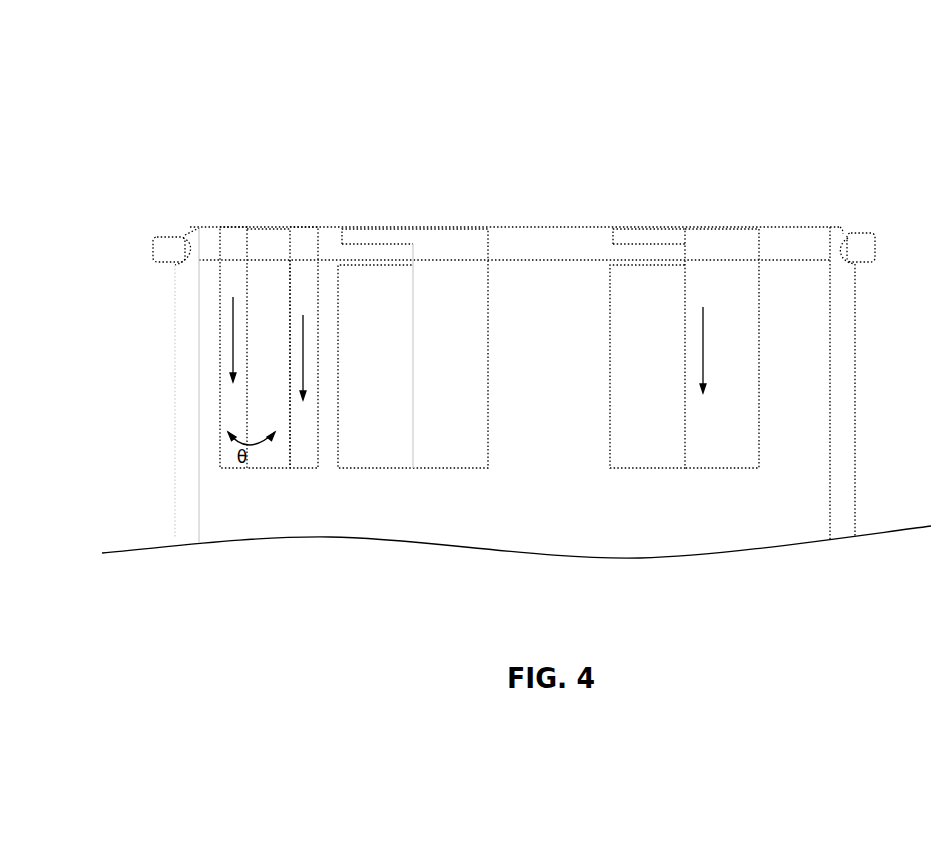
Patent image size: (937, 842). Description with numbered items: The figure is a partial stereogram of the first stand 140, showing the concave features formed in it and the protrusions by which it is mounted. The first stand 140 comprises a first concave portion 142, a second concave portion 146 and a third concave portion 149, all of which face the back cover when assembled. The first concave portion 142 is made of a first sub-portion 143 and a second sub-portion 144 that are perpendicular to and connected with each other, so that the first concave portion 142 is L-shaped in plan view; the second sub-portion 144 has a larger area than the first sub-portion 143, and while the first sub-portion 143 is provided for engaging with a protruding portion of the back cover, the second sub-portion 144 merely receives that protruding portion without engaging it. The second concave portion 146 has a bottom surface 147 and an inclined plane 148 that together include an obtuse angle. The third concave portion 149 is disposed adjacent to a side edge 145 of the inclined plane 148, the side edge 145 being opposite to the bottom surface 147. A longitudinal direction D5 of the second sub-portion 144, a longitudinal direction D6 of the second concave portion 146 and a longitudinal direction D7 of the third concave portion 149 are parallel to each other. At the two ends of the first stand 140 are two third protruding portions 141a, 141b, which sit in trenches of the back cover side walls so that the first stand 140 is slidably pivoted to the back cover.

The first stand 140 is at (83, 50).
The third protruding portion 141a is at (860, 250).
The third protruding portion 141b is at (166, 247).
The first concave portion 142 is at (787, 125).
The first sub-portion 143 is at (647, 240).
The second sub-portion 144 is at (713, 273).
The side edge 145 is at (288, 410).
The second concave portion 146 is at (328, 133).
The bottom surface 147 is at (231, 280).
The inclined plane 148 is at (265, 280).
The third concave portion 149 is at (305, 278).
The longitudinal direction of the second sub-portion D5 is at (717, 350).
The longitudinal direction of the second concave portion D6 is at (233, 325).
The longitudinal direction of the third concave portion D7 is at (316, 357).